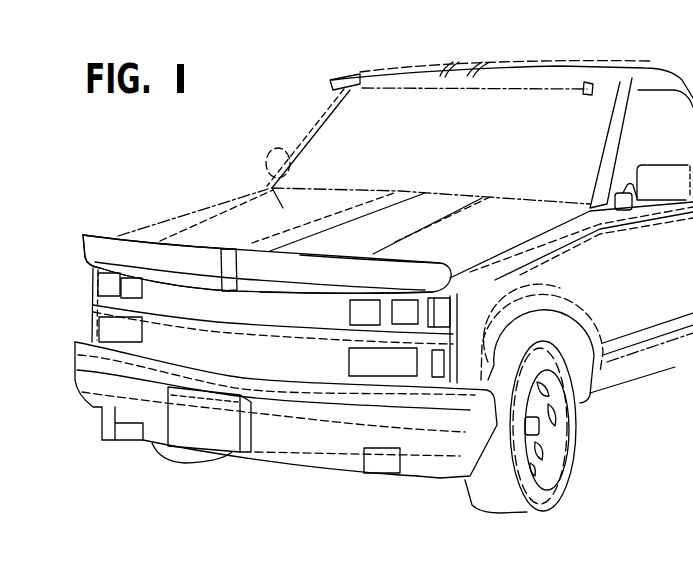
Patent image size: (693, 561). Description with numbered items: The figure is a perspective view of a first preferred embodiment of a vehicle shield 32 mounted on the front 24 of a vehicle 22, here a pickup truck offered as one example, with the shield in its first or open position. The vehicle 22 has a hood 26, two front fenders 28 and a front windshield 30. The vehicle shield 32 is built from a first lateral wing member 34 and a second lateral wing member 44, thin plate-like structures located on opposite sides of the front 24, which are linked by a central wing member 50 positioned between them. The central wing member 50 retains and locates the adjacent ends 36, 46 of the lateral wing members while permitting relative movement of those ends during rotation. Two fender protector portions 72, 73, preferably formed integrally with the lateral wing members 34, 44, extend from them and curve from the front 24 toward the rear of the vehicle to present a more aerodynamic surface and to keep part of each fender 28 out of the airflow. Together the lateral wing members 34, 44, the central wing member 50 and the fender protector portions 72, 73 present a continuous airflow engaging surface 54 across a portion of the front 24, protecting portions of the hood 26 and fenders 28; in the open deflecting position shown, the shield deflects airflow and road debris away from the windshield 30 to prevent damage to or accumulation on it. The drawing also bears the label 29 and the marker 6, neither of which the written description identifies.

The vehicle 22 is at (476, 64).
The front of the vehicle 24 is at (180, 293).
The hood 26 is at (262, 186).
The front fenders 28 is at (96, 287).
The hood-fender seam 29 is at (452, 277).
The front windshield 30 is at (360, 112).
The vehicle shield 32 is at (348, 337).
The first lateral wing member 34 is at (151, 236).
The adjacent end of the first lateral wing member 36 is at (210, 247).
The second lateral wing member 44 is at (316, 247).
The adjacent end of the second lateral wing member 46 is at (264, 249).
The central wing member 50 is at (224, 294).
The continuous airflow engaging surface 54 is at (286, 297).
The fender protector portion 72 is at (84, 250).
The fender protector portion 73 is at (407, 277).
The section line 6- 6 is at (692, 534).